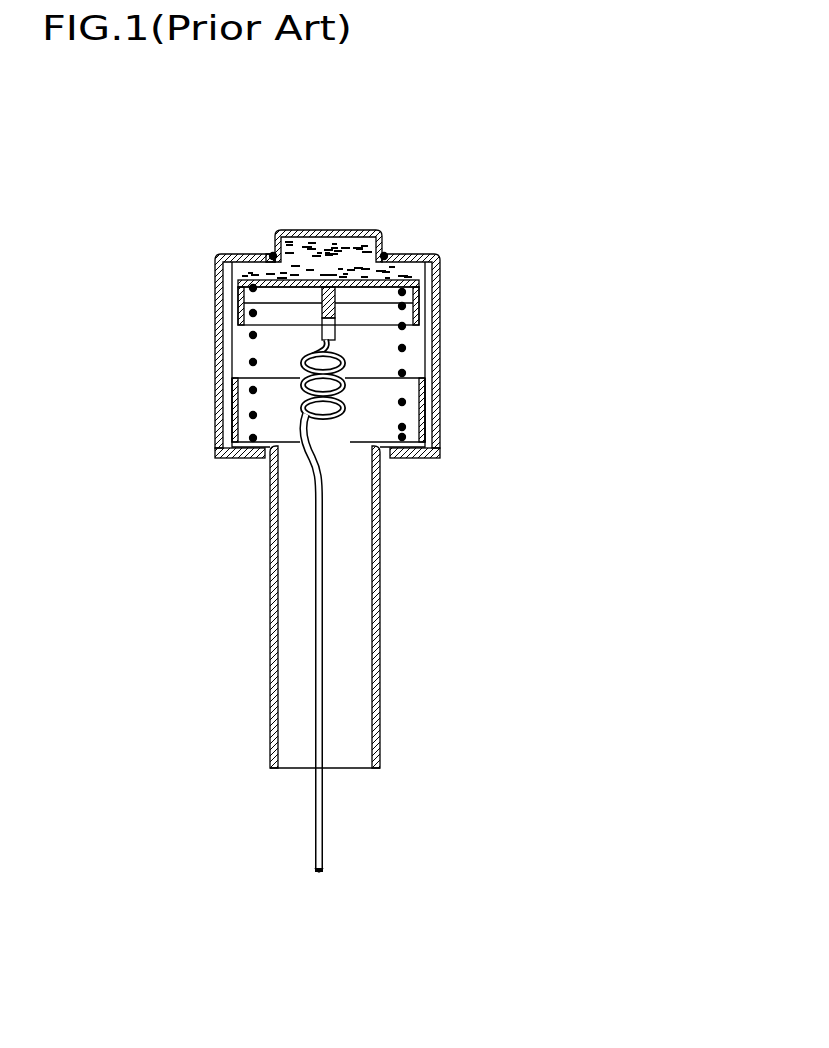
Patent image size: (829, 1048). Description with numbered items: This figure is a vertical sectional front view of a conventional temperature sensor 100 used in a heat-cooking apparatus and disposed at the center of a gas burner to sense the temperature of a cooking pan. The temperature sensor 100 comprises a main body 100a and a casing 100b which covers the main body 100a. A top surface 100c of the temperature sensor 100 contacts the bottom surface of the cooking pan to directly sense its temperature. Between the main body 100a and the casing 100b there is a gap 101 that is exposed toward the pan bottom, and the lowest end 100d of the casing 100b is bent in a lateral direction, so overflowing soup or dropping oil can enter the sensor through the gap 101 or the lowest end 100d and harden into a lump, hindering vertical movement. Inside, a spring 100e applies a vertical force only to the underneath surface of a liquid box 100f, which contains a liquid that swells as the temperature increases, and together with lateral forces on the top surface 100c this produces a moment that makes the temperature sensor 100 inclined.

The temperature sensor 100 is at (440, 302).
The main body 100a is at (352, 230).
The casing 100b is at (440, 362).
The top surface 100c is at (272, 255).
The lowest end 100d is at (253, 460).
The spring 100e is at (250, 335).
The liquid box 100f is at (318, 250).
The gap 101 is at (272, 258).